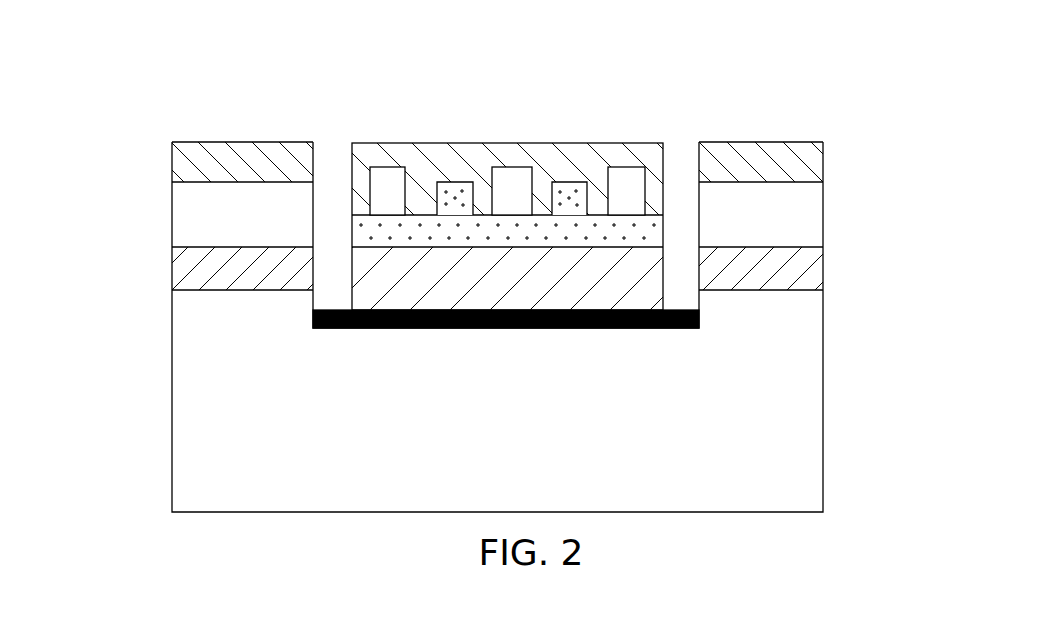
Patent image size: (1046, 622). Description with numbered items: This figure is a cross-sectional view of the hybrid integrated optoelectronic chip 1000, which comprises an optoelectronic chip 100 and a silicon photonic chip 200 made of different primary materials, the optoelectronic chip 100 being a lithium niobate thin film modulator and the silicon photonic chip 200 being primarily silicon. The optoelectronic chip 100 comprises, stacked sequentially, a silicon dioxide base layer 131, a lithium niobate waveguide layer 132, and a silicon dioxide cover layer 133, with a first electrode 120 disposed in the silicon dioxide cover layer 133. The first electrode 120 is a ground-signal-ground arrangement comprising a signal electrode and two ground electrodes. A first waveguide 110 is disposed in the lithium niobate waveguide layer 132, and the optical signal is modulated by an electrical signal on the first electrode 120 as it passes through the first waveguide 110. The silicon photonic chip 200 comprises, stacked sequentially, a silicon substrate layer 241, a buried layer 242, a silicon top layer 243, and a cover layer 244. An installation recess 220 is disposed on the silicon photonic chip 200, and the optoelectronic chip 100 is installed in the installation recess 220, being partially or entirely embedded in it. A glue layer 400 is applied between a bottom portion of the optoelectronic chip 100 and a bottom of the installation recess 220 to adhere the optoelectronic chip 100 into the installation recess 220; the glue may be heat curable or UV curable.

The hybrid integrated optoelectronic chip 1000 is at (86, 17).
The optoelectronic chip 100 is at (527, 82).
The silicon photonic chip 200 is at (774, 56).
The glue layer 400 is at (327, 308).
The first electrode 120 is at (402, 167).
The first waveguide 110 is at (465, 182).
The silicon dioxide cover layer 133 is at (687, 132).
The lithium niobate waveguide layer 132 is at (645, 236).
The silicon dioxide base layer 131 is at (643, 293).
The installation recess 220 is at (686, 160).
The cover layer 244 is at (815, 156).
The silicon top layer 243 is at (815, 220).
The buried layer 242 is at (813, 270).
The silicon substrate layer 241 is at (800, 408).